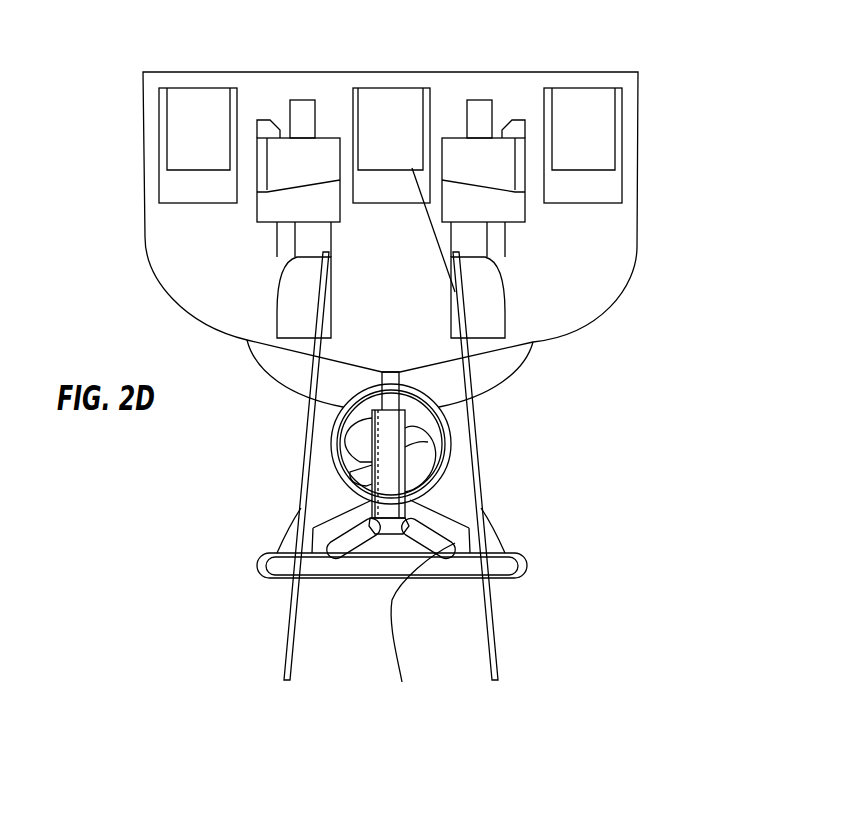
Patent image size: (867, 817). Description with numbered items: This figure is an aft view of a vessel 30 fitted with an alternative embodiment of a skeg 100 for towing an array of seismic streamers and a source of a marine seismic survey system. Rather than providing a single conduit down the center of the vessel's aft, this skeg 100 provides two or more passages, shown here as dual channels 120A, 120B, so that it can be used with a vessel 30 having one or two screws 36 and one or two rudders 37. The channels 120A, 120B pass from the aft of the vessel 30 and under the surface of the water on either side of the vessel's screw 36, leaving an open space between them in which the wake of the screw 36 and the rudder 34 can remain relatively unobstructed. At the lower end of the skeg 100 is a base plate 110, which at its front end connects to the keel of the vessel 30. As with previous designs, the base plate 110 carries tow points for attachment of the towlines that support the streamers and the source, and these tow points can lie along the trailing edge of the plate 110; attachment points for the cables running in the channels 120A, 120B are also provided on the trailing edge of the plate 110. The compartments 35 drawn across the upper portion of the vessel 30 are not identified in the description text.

The vessel 30 is at (608, 70).
The battery compartment 35 is at (619, 140).
The rudder 34 is at (498, 258).
The screw 36 is at (443, 457).
The rudder 37 is at (368, 445).
The base plate 110 is at (525, 568).
The channel 120A is at (300, 495).
The channel 120B is at (485, 520).
The skeg 100 is at (617, 438).